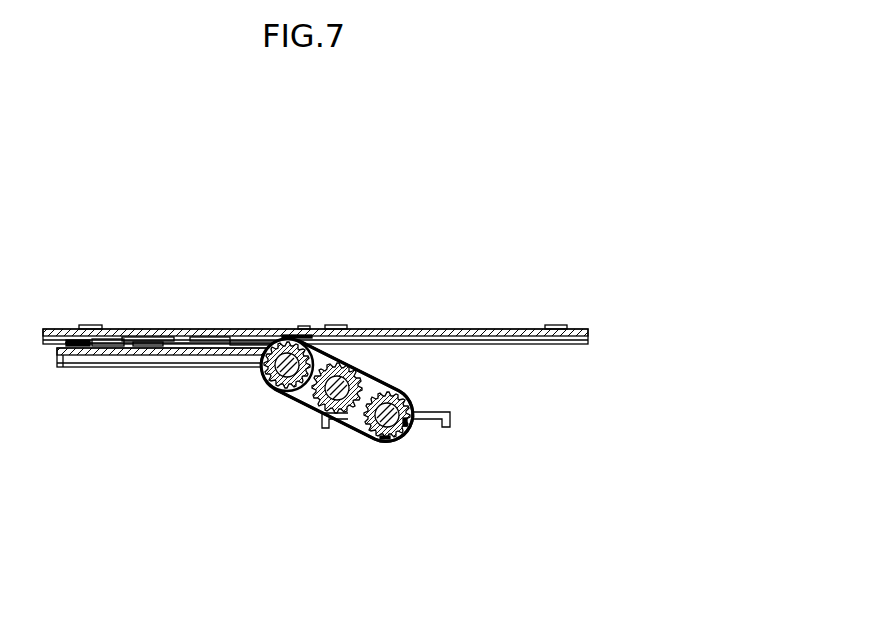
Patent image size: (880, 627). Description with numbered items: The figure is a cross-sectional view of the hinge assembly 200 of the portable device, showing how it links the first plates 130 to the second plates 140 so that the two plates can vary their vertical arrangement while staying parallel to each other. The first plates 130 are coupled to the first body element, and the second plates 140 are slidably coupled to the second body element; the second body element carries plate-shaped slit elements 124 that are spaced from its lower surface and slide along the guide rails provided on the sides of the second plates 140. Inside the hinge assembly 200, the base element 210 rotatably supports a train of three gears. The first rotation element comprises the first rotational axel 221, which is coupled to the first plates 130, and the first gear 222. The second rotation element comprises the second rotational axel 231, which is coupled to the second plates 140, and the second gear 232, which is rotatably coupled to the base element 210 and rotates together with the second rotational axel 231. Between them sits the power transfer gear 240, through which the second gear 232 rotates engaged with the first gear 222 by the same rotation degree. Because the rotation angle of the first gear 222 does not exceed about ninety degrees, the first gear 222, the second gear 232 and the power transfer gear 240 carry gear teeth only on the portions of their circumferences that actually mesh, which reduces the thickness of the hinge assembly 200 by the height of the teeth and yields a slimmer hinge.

The slit element 124 is at (441, 341).
The second plate 140 is at (144, 371).
The hinge assembly 200 is at (335, 463).
The base element 210 is at (395, 443).
The first rotational axel 221 is at (402, 402).
The first gear 222 is at (366, 432).
The second rotational axel 231 is at (257, 384).
The second gear 232 is at (297, 393).
The power transfer gear 240 is at (366, 392).
The first plate 130 is at (456, 418).